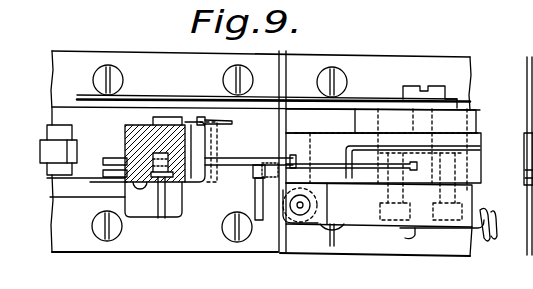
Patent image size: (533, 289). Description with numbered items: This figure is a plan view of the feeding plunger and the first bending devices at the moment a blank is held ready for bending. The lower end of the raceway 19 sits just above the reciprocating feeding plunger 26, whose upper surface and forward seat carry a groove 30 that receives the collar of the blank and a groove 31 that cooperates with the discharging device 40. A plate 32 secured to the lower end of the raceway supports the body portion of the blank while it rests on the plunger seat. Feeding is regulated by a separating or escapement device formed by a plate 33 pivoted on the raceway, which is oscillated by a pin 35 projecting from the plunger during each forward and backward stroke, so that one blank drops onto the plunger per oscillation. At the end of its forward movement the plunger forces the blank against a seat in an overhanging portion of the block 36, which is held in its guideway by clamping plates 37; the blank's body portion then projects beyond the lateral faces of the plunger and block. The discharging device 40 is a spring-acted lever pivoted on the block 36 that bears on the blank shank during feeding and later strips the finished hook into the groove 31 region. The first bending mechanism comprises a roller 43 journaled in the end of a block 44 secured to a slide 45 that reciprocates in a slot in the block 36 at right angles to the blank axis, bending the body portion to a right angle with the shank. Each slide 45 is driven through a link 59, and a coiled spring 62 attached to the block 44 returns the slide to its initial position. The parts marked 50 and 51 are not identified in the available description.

The raceway 19 is at (141, 127).
The feeding plunger 26 is at (88, 136).
The groove 30 is at (123, 174).
The groove 31 is at (117, 158).
The plate 32 is at (149, 207).
The plate 33 is at (189, 124).
The pin 35 is at (203, 121).
The block 36 is at (478, 137).
The clamping plates 37 is at (439, 250).
The discharging device 40 is at (320, 165).
The roller 43 is at (300, 224).
The block 44 is at (363, 210).
The slide 45 is at (462, 122).
The base 50 is at (139, 287).
The plate 51 is at (219, 288).
The link 59 is at (362, 102).
The coiled spring 62 is at (489, 223).